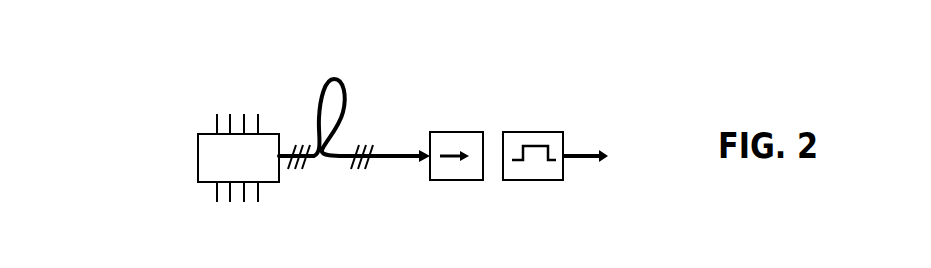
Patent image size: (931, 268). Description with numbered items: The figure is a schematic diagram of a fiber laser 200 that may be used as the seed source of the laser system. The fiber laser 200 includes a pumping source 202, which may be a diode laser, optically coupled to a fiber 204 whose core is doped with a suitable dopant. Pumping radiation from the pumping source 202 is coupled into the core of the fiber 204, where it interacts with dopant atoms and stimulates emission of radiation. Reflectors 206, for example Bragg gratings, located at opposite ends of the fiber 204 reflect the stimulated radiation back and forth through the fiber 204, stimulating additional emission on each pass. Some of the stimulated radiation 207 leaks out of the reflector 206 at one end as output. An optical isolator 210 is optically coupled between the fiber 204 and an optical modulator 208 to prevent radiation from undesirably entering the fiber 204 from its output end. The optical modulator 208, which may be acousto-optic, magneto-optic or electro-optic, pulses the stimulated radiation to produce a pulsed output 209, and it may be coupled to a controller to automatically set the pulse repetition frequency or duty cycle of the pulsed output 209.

The fiber laser 200 is at (116, 78).
The pumping source 202 is at (198, 157).
The fiber 204 is at (343, 88).
The reflectors 206 is at (358, 170).
The stimulated radiation 207 is at (400, 153).
The optical isolator 210 is at (455, 131).
The optical modulator 208 is at (535, 181).
The pulsed output 209 is at (584, 158).